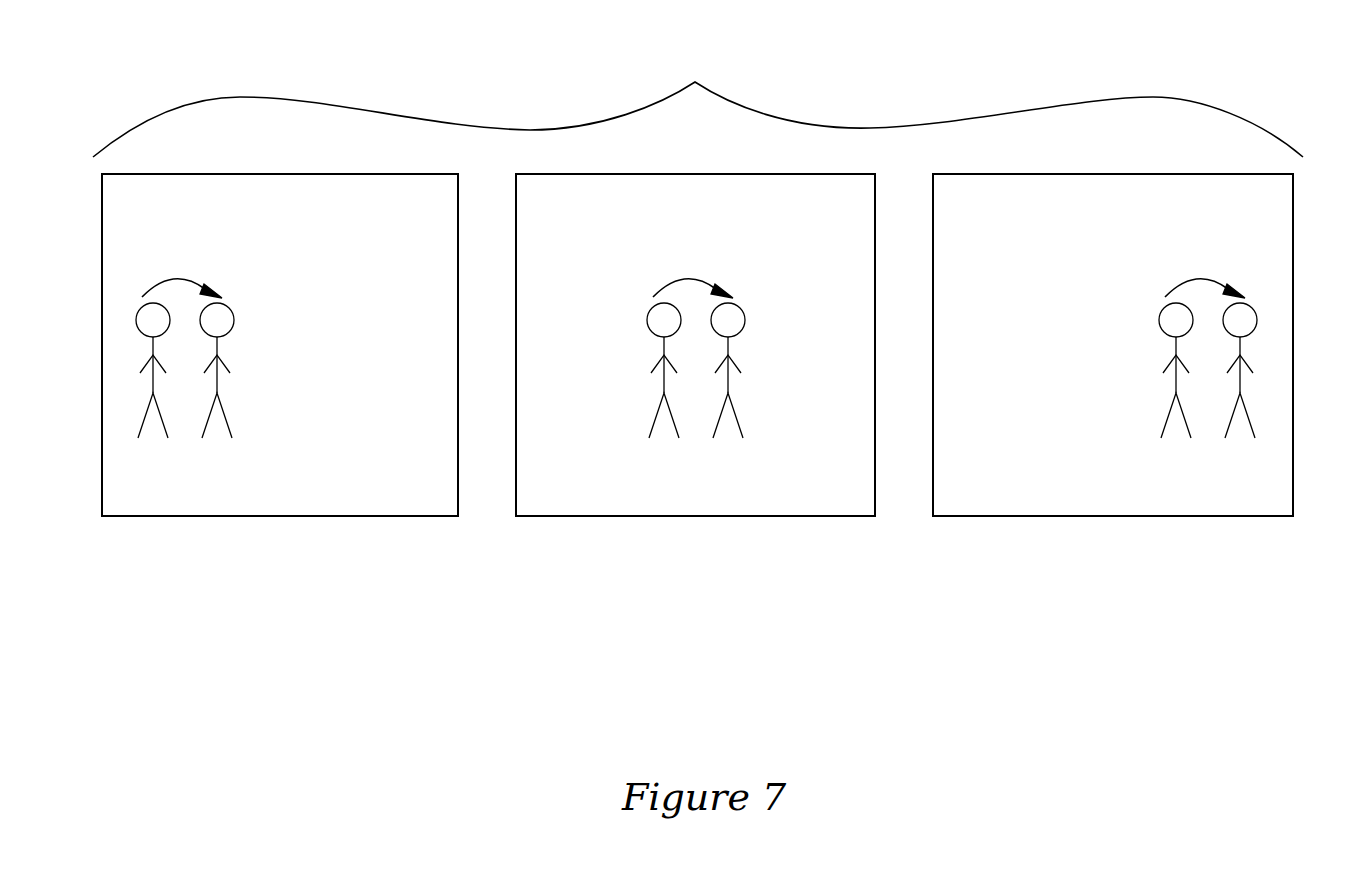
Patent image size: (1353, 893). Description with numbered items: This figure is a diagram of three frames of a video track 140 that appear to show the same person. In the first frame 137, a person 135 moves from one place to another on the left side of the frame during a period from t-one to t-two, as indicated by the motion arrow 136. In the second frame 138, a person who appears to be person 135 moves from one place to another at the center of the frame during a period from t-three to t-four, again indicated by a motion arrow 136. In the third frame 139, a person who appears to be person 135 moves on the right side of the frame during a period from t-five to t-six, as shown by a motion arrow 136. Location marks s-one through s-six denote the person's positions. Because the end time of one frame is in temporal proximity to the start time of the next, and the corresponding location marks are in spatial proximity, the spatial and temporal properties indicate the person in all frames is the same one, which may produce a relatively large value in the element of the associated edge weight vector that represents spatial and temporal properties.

The person 135 is at (152, 382).
The motion arrow 136 is at (173, 278).
The frame 137 is at (278, 174).
The frame 138 is at (695, 174).
The frame 139 is at (1115, 174).
The video track 140 is at (695, 82).